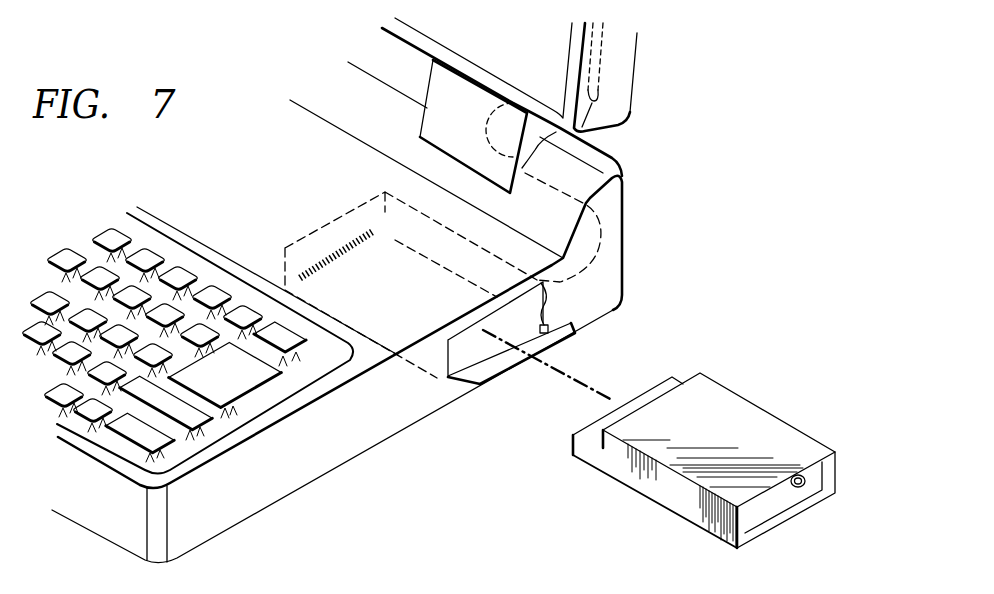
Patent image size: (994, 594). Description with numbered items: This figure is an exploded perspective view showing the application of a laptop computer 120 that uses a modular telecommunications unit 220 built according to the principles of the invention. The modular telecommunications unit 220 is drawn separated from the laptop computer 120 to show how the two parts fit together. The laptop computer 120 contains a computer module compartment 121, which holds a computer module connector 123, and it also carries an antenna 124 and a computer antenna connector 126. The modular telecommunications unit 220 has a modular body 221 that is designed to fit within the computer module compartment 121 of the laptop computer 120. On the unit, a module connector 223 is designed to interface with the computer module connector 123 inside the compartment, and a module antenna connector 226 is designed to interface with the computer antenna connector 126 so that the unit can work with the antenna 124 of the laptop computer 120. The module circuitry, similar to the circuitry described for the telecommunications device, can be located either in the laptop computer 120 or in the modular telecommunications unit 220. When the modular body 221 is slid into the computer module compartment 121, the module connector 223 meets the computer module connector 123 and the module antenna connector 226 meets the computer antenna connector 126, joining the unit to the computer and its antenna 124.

The laptop computer 120 is at (254, 103).
The computer module compartment 121 is at (449, 378).
The computer module connector 123 is at (327, 244).
The antenna 124 is at (610, 50).
The computer antenna connector 126 is at (552, 322).
The modular telecommunications unit 220 is at (772, 398).
The modular body 221 is at (790, 437).
The module connector 223 is at (566, 419).
The module antenna connector 226 is at (812, 492).